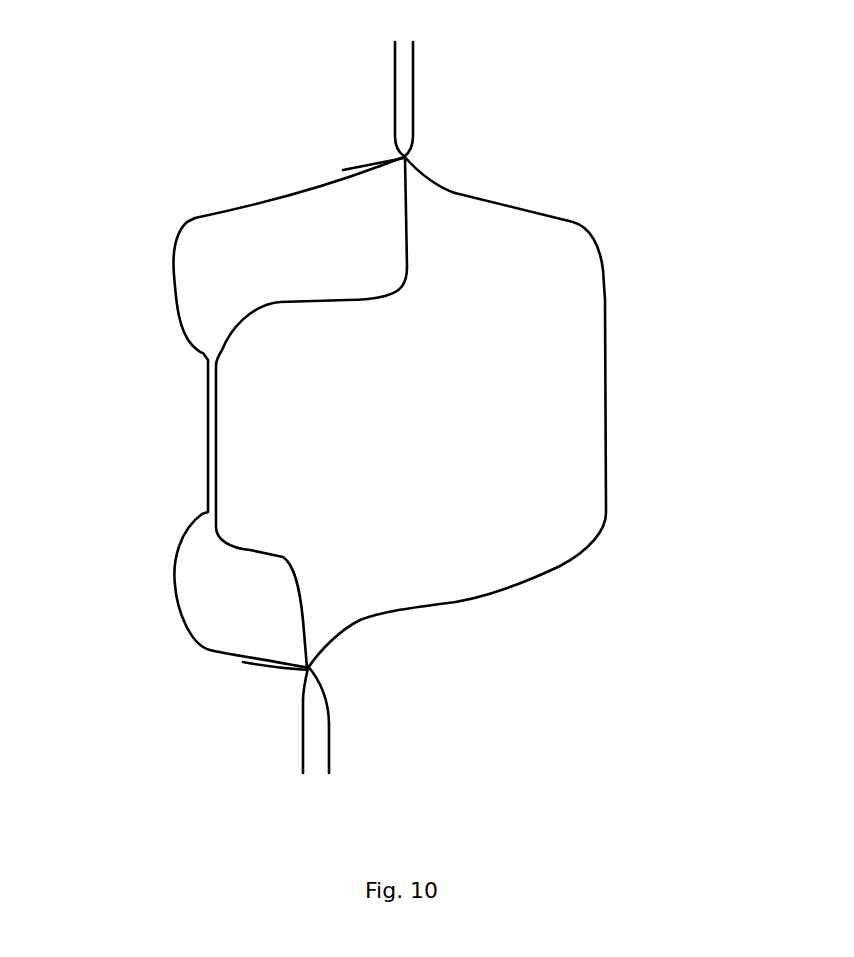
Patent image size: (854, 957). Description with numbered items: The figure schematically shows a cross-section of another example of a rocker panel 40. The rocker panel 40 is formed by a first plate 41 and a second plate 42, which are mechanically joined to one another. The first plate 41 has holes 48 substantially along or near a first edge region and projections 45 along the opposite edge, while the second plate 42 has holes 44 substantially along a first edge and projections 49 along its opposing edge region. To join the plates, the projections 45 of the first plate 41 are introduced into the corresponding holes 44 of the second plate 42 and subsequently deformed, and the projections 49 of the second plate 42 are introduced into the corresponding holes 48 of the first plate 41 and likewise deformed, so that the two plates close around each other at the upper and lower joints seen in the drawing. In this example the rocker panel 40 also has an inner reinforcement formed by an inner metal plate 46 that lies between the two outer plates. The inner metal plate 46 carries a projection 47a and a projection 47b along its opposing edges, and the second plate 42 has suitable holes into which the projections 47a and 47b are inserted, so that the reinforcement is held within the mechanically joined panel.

The rocker panel 40 is at (532, 110).
The first plate 41 is at (602, 268).
The second plate 42 is at (197, 215).
The holes 44 is at (380, 160).
The projections 45 is at (396, 77).
The inner metal plate 46 is at (380, 292).
The projection 47a is at (260, 670).
The projection 47b is at (353, 168).
The holes 48 is at (319, 672).
The projections 49 is at (330, 753).